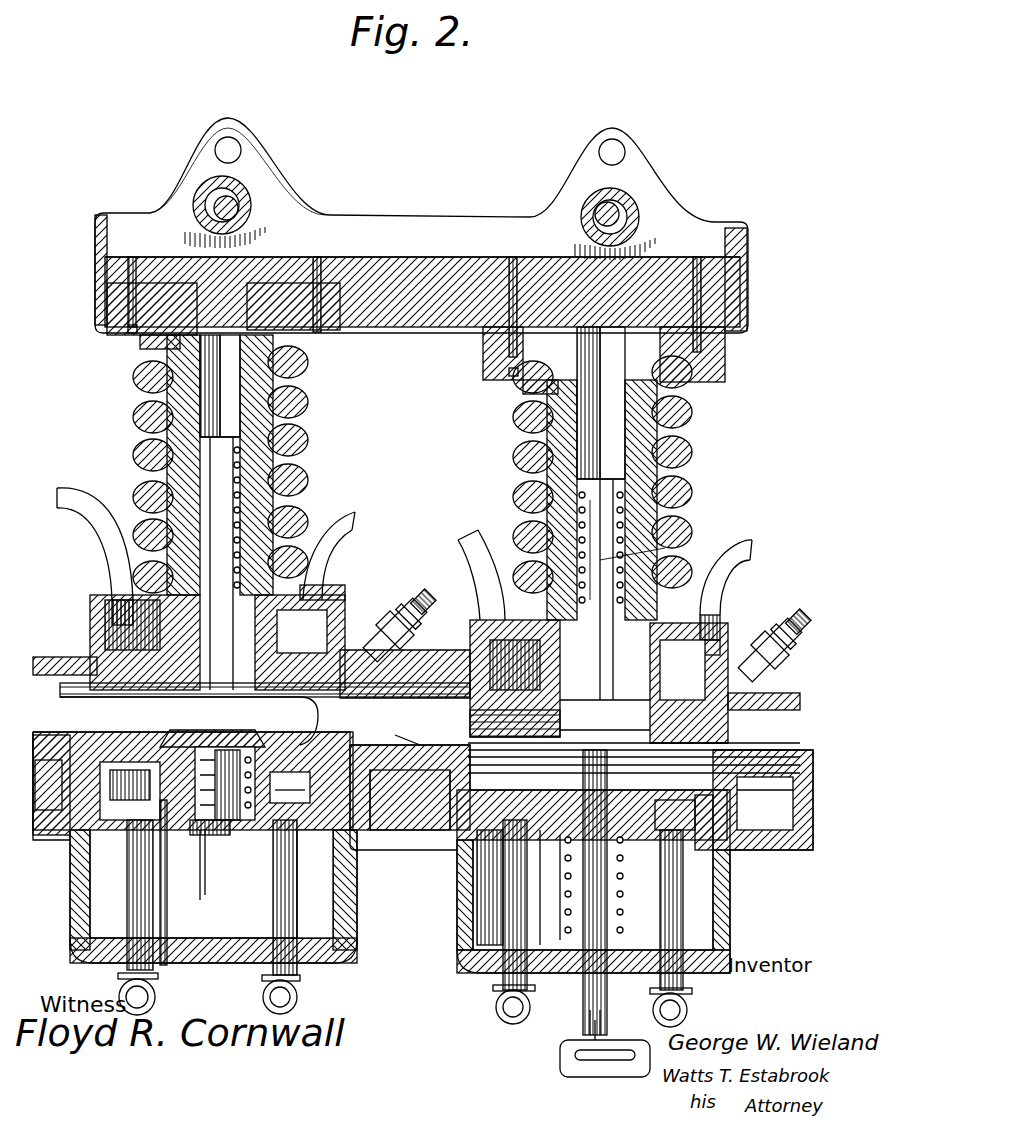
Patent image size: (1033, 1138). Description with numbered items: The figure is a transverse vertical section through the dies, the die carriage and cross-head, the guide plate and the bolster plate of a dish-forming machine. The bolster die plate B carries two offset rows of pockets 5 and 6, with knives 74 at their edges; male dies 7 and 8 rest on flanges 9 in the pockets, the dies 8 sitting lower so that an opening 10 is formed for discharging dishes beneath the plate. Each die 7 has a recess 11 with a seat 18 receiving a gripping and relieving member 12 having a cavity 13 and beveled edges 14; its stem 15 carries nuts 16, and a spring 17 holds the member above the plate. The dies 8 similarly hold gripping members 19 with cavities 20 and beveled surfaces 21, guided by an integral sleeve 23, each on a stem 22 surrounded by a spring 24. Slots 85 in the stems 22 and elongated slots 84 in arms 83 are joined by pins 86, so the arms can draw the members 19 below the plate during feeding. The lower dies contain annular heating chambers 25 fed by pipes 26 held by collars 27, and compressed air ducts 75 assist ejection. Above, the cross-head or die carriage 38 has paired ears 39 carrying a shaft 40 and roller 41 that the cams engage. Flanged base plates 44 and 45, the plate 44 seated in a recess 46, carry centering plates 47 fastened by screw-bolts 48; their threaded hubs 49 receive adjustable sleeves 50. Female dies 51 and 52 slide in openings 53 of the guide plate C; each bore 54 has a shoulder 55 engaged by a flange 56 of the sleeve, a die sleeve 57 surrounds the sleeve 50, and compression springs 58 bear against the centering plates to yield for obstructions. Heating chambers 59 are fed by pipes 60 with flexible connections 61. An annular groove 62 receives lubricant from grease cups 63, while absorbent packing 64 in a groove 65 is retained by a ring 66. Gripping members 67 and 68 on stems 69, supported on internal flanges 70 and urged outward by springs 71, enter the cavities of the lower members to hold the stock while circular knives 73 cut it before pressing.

The pockets 5 is at (358, 930).
The pockets 6 is at (458, 948).
The male or stationary dies 7 is at (48, 785).
The male or stationary dies 8 is at (712, 860).
The flanges 9 is at (318, 840).
The opening 10 is at (470, 786).
The recess 11 is at (290, 792).
The gripping and relieving member 12 is at (252, 745).
The cavity 13 is at (228, 748).
The beveled edges 14 is at (180, 732).
The stem 15 is at (215, 860).
The nuts 16 is at (230, 835).
The spring 17 is at (168, 840).
The seat 18 is at (482, 802).
The gripping members 19 is at (640, 752).
The cavities 20 is at (690, 760).
The beveled surfaces 21 is at (720, 790).
The stems 22 is at (583, 995).
The integral sleeve 23 is at (480, 895).
The spring 24 is at (612, 905).
The annular heating chambers 25 is at (422, 804).
The pipes 26 is at (275, 918).
The collars or nuts 27 is at (160, 975).
The cross-head or die carriage 38 is at (675, 228).
The ears 39 is at (255, 162).
The shaft 40 is at (252, 196).
The roller 41 is at (243, 210).
The flanged base plate 44 is at (340, 330).
The flanged base plate 45 is at (725, 362).
The recess 46 is at (320, 290).
The centering plates 47 is at (132, 333).
The screw-bolts 48 is at (135, 335).
The central hubs 49 is at (300, 350).
The sleeves 50 is at (280, 410).
The female or upper movable dies 51 is at (340, 588).
The female or upper movable dies 52 is at (725, 630).
The openings 53 is at (475, 640).
The central recess or bore 54 is at (345, 515).
The annular shoulder 55 is at (300, 642).
The flange 56 is at (302, 631).
The sleeve 57 is at (265, 470).
The compression springs 58 is at (260, 442).
The heating chambers 59 is at (105, 605).
The pipes 60 is at (112, 605).
The flexible connections 61 is at (85, 493).
The annular groove 62 is at (75, 660).
The oil or grease cups 63 is at (405, 595).
The absorbent packing 64 is at (480, 615).
The groove 65 is at (470, 690).
The ring 66 is at (470, 725).
The gripping and relieving member 67 is at (192, 720).
The gripping and relieving member 68 is at (640, 733).
The stems 69 is at (660, 520).
The internal flanges 70 is at (493, 566).
The springs 71 is at (660, 545).
The circular knives 73 is at (300, 700).
The knives 74 is at (556, 731).
The compressed air ducts 75 is at (120, 740).
The arms 83 is at (603, 1030).
The elongated slots 84 is at (575, 1058).
The slots 85 is at (600, 1020).
The pins 86 is at (580, 1077).
The bolster die plate B is at (378, 800).
The guide plate C is at (407, 727).